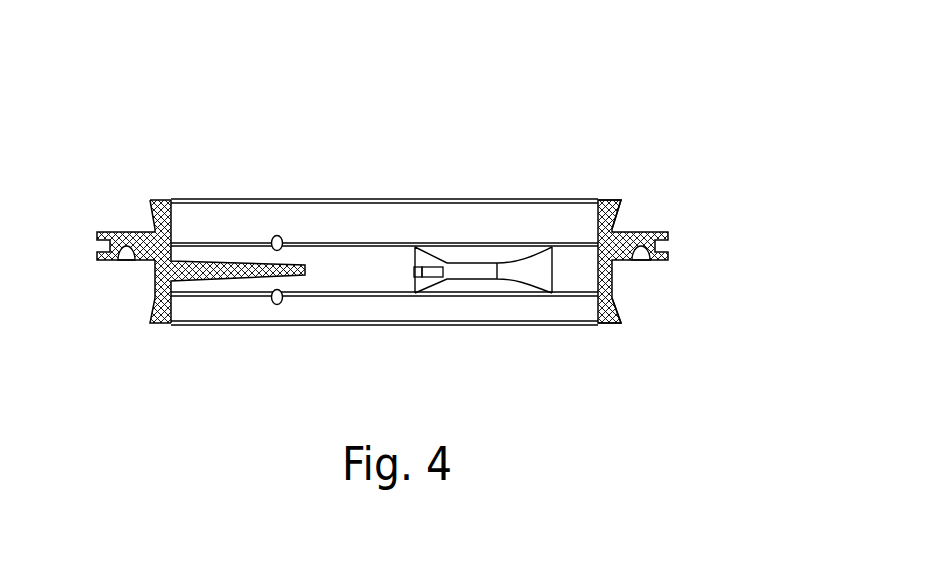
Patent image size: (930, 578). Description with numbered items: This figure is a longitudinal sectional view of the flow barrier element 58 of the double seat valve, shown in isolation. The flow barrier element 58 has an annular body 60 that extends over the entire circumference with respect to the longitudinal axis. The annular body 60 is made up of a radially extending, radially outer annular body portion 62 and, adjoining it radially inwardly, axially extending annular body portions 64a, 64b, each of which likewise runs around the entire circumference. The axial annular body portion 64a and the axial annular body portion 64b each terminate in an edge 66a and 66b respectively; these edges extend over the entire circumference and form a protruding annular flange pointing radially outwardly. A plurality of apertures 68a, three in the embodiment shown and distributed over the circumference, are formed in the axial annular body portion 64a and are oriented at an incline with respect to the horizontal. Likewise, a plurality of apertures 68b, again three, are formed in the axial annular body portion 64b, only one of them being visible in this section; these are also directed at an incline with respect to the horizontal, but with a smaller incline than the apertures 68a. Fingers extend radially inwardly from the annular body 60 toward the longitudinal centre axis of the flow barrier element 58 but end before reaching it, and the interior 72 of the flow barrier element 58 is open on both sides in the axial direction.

The flow barrier element 58 is at (379, 210).
The annular body 60 is at (168, 237).
The radially outer annular body portion 62 is at (148, 258).
The axial annular body portion 64a is at (170, 217).
The axial annular body portion 64b is at (170, 316).
The edge 66a is at (150, 209).
The edge 66b is at (152, 320).
The apertures 68a is at (281, 243).
The apertures 68b is at (282, 302).
The interior 72 is at (397, 217).